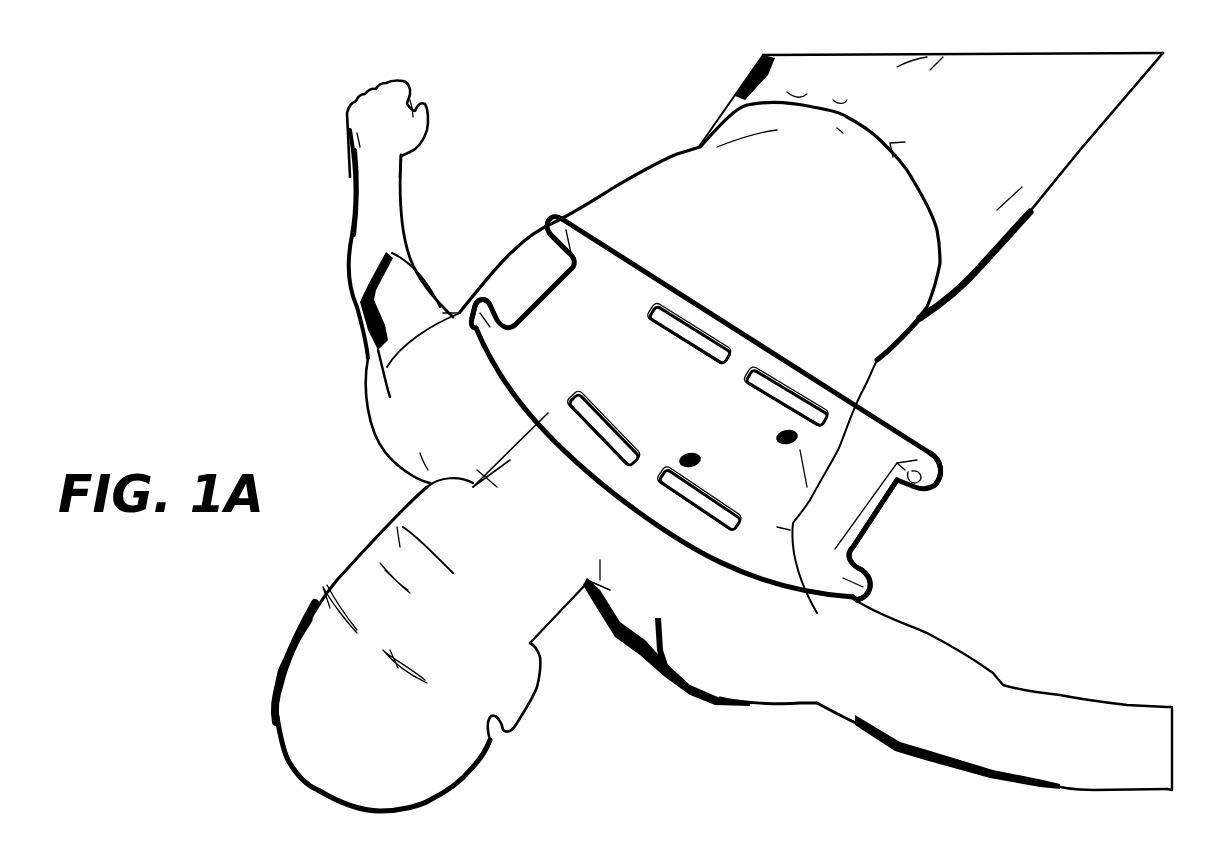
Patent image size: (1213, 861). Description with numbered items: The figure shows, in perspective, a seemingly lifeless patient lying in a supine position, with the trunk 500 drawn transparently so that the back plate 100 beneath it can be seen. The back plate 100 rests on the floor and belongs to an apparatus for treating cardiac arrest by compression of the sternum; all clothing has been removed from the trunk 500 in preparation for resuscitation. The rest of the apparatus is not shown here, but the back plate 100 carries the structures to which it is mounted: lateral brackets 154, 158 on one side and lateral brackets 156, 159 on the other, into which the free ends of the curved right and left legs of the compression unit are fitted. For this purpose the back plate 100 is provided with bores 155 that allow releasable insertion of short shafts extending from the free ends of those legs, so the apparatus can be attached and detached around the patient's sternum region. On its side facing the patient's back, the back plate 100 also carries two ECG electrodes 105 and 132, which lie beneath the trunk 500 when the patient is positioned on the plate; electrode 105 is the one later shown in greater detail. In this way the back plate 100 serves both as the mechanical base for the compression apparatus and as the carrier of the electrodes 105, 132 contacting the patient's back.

The trunk 500 is at (643, 215).
The back plate 100 is at (857, 452).
The lateral bracket 156 is at (558, 222).
The lateral bracket 159 is at (478, 338).
The lateral bracket 154 is at (933, 452).
The bore 155 is at (903, 487).
The lateral bracket 158 is at (870, 590).
The ECG electrode 105 is at (690, 460).
The ECG electrode 132 is at (787, 437).